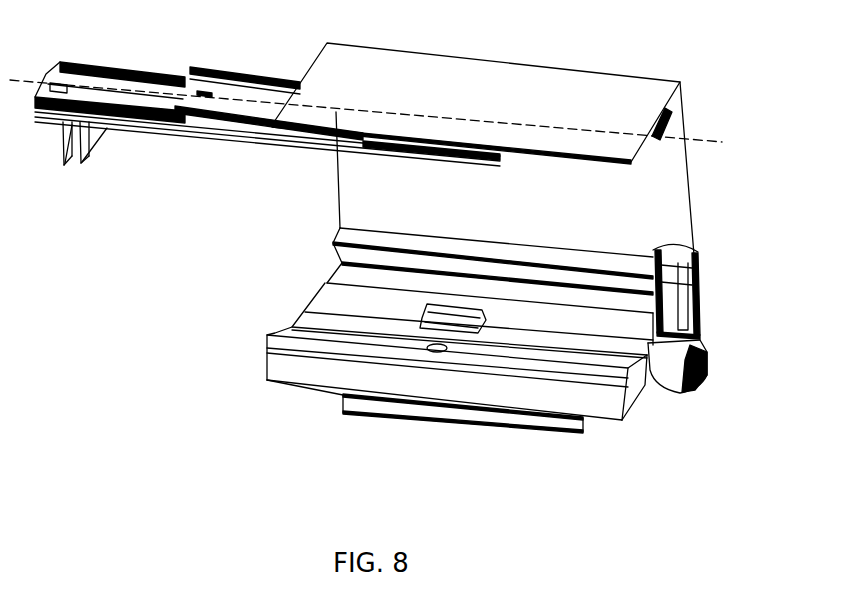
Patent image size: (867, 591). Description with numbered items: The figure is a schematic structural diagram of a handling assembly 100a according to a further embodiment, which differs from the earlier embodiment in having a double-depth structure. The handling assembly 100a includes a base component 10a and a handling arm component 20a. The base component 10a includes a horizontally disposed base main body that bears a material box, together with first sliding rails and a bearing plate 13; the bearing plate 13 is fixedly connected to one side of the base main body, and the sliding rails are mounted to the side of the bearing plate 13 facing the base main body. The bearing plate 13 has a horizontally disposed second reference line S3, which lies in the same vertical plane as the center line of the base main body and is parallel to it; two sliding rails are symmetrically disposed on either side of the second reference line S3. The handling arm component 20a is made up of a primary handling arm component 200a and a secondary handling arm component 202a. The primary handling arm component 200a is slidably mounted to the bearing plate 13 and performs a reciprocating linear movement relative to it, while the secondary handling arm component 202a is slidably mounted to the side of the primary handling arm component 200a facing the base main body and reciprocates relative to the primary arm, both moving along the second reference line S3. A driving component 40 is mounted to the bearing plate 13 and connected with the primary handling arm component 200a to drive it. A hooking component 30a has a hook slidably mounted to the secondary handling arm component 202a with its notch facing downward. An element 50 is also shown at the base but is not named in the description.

The handling assembly 100a is at (608, 54).
The base component 10a is at (397, 355).
The bearing plate 13 is at (407, 195).
The handling arm component 20a is at (267, 148).
The primary handling arm component 200a is at (237, 108).
The secondary handling arm component 202a is at (259, 197).
The hooking component 30a is at (85, 133).
The driving component 40 is at (660, 133).
The roller 50 is at (707, 362).
The second reference line S3 is at (367, 111).